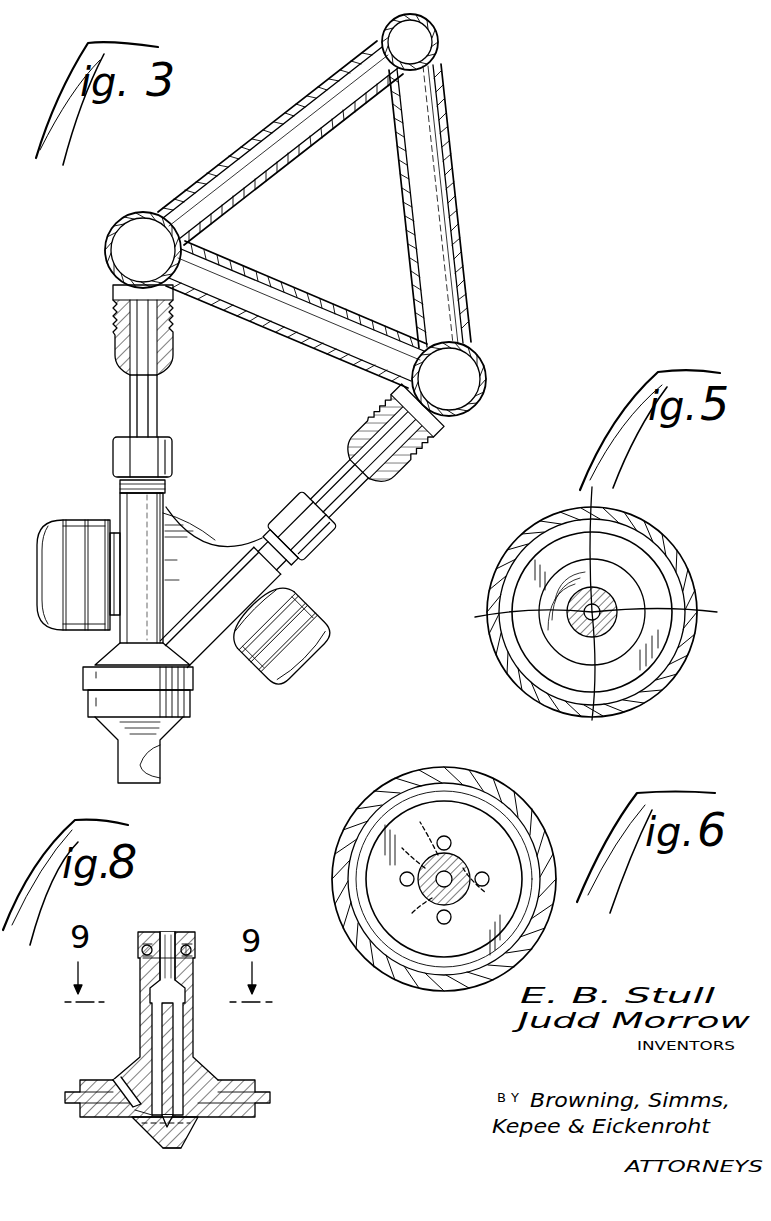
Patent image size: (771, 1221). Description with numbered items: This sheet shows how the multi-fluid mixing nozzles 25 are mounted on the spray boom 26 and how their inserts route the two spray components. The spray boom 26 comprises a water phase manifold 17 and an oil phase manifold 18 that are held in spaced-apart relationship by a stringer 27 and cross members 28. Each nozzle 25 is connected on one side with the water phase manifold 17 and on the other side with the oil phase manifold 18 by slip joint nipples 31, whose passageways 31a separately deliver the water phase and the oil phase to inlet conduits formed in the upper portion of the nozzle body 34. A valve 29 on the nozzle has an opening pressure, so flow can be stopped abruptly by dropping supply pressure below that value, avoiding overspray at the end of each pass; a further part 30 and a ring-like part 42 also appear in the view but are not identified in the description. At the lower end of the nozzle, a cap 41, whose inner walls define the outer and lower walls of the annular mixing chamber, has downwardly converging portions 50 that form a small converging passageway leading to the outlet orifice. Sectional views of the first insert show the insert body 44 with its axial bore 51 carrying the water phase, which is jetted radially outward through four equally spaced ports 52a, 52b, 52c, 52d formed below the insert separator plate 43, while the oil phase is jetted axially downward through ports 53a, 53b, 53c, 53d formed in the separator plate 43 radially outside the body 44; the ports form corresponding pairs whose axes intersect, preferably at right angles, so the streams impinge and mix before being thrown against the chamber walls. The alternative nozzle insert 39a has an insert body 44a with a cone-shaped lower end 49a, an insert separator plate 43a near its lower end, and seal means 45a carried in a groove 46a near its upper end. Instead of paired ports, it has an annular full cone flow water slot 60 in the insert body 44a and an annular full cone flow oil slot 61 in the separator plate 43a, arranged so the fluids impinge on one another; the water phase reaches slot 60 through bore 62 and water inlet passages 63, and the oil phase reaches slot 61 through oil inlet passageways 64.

In FIG. 3, the water phase manifold 17 is at (104, 253).
In FIG. 3, the oil phase manifold 18 is at (487, 378).
In FIG. 3, the multi-fluid mixing nozzle 25 is at (78, 500).
In FIG. 3, the spray boom 26 is at (460, 161).
In FIG. 3, the stringer 27 is at (440, 40).
In FIG. 3, the cross members 28 is at (323, 80).
In FIG. 3, the valve 29 is at (44, 626).
In FIG. 3, the valve knob 30 is at (336, 637).
In FIG. 3, the slip joint nipples 31 is at (128, 412).
In FIG. 3, the passageways 31a is at (158, 382).
In FIG. 3, the body 34 is at (165, 514).
In FIG. 3, the cap 41 is at (110, 733).
In FIG. 5, the cap 41 is at (502, 557).
In FIG. 6, the cap 41 is at (350, 824).
In FIG. 3, the retaining ring 42 is at (85, 703).
In FIG. 5, the retaining ring 42 is at (490, 589).
In FIG. 6, the retaining ring 42 is at (385, 790).
In FIG. 6, the insert separator plate 43 is at (368, 851).
In FIG. 6, the insert body 44 is at (460, 862).
In FIG. 5, the downwardly converging portions 50 is at (640, 602).
In FIG. 5, the axial bore 51 is at (594, 603).
In FIG. 6, the axial bore 51 is at (452, 897).
In FIG. 5, the port 52a is at (669, 622).
In FIG. 6, the port 52a is at (487, 884).
In FIG. 5, the port 52b is at (584, 680).
In FIG. 6, the port 52b is at (412, 912).
In FIG. 5, the port 52c is at (511, 618).
In FIG. 6, the port 52c is at (411, 854).
In FIG. 5, the port 52d is at (592, 508).
In FIG. 6, the port 52d is at (421, 831).
In FIG. 6, the port 53a is at (489, 875).
In FIG. 6, the port 53b is at (444, 924).
In FIG. 6, the port 53c is at (400, 879).
In FIG. 6, the port 53d is at (444, 836).
In FIG. 8, the nozzle insert 39a is at (140, 1035).
In FIG. 8, the insert separator plate 43a is at (253, 1083).
In FIG. 8, the insert body 44a is at (193, 1035).
In FIG. 8, the seal means 45a is at (193, 952).
In FIG. 8, the groove 46a is at (183, 945).
In FIG. 8, the cone-shaped lower end 49a is at (155, 1146).
In FIG. 8, the annular full cone flow water slot 60 is at (185, 1135).
In FIG. 8, the annular full cone flow oil slot 61 is at (130, 1117).
In FIG. 8, the bore 62 is at (165, 930).
In FIG. 8, the water inlet passages 63 is at (180, 1052).
In FIG. 8, the oil inlet passageways 64 is at (118, 1078).